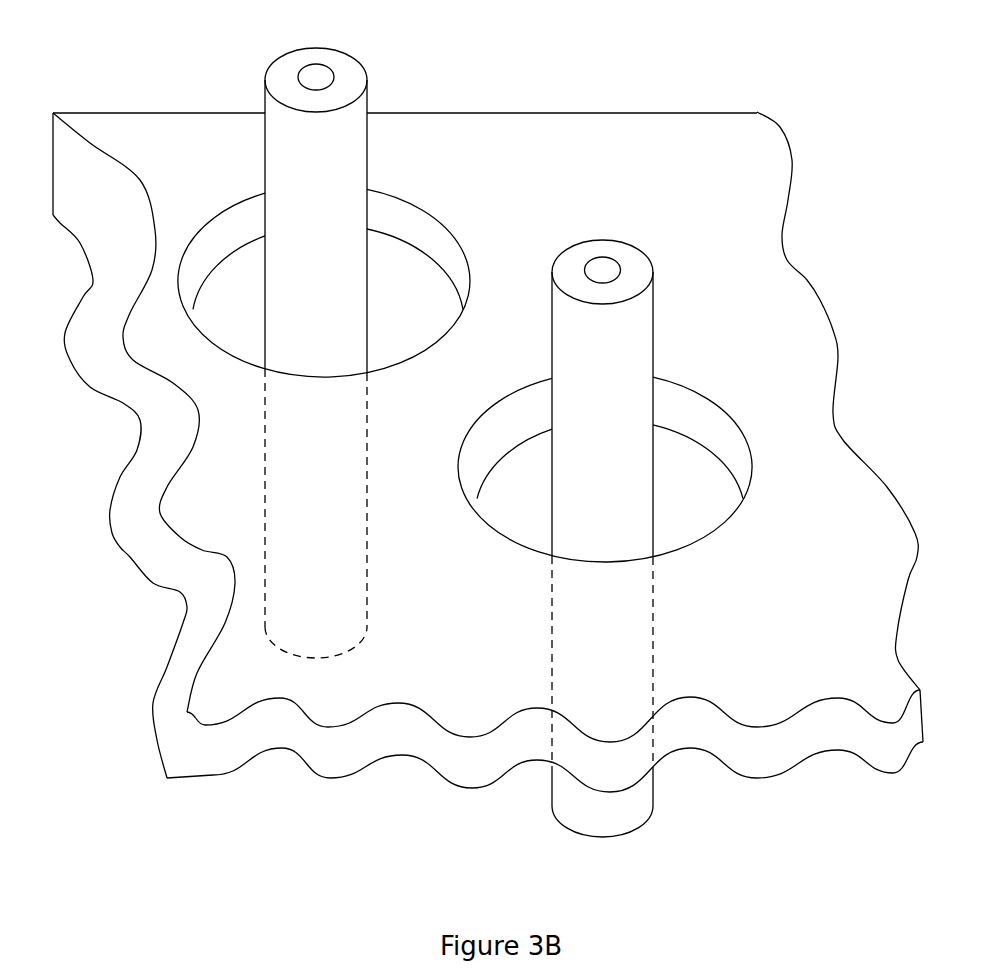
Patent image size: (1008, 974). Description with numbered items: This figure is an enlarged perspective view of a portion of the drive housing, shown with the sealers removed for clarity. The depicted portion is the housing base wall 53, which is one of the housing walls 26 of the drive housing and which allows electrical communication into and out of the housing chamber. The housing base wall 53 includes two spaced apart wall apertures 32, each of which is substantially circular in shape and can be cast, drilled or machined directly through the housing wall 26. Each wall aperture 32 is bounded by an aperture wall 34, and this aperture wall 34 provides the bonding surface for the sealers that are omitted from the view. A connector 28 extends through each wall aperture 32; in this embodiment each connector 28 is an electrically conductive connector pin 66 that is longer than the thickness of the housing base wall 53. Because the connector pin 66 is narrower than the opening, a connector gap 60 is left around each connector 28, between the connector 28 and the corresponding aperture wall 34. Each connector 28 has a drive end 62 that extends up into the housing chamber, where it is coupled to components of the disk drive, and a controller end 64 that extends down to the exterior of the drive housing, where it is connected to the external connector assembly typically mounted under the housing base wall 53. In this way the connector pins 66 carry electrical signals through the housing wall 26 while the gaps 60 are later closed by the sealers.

The housing wall 26 is at (221, 536).
The connector 28 is at (549, 444).
The wall aperture 32 is at (410, 330).
The aperture wall 34 is at (408, 233).
The housing base wall 53 is at (640, 173).
The connector gap 60 is at (233, 256).
The drive end 62 is at (350, 75).
The controller end 64 is at (295, 615).
The connector pin 66 is at (467, 444).